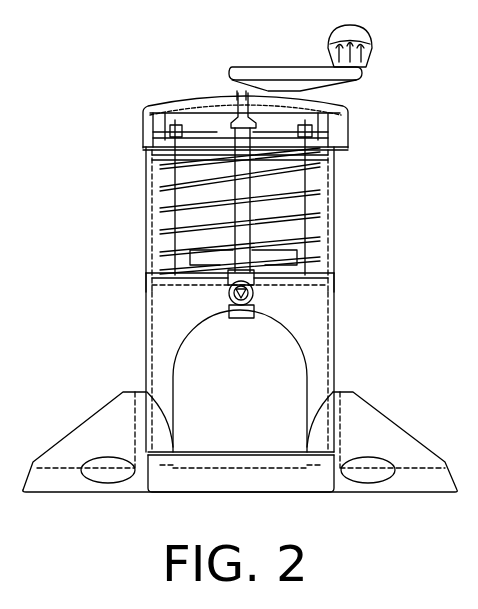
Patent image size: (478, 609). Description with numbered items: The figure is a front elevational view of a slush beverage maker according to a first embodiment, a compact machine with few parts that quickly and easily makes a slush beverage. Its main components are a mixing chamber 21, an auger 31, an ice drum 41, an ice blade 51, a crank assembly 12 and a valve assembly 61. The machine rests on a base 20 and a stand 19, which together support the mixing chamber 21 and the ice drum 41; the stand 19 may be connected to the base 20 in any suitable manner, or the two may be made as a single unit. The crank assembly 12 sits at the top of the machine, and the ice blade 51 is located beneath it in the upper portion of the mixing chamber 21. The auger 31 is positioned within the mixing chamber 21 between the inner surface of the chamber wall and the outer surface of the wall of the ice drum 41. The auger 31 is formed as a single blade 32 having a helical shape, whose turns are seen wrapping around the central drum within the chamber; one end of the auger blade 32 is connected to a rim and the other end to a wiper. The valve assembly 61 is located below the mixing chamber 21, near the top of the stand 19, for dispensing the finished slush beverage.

The crank assembly 12 is at (232, 56).
The ice blade 51 is at (200, 160).
The mixing chamber 21 is at (334, 207).
The ice drum 41 is at (145, 198).
The auger 31 is at (322, 231).
The auger blade 32 is at (155, 230).
The valve assembly 61 is at (285, 297).
The stand 19 is at (337, 380).
The base 20 is at (37, 492).